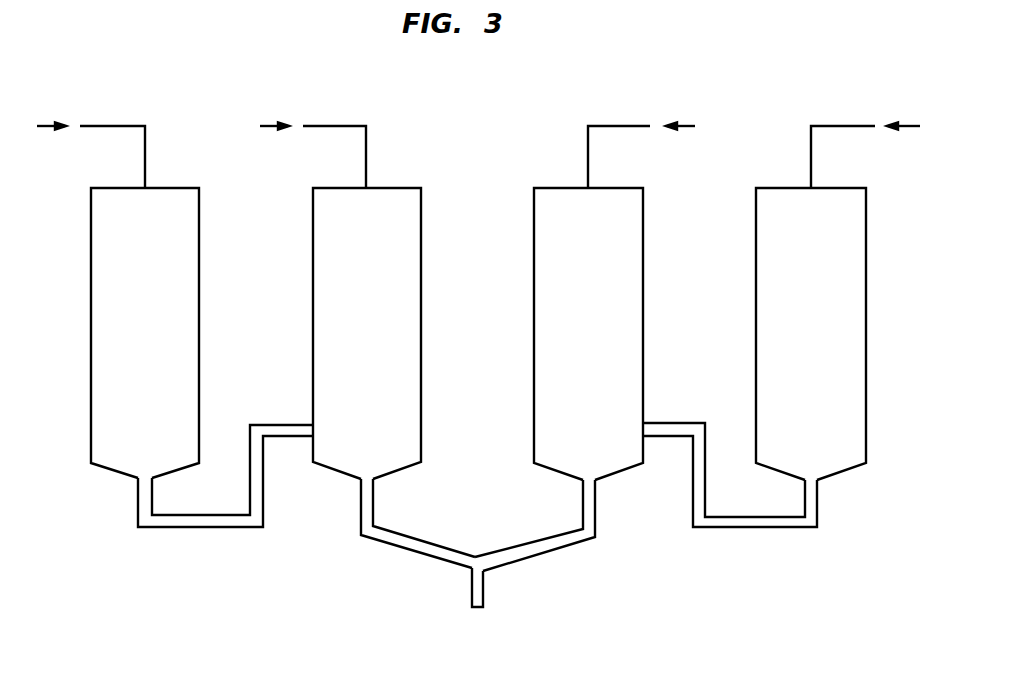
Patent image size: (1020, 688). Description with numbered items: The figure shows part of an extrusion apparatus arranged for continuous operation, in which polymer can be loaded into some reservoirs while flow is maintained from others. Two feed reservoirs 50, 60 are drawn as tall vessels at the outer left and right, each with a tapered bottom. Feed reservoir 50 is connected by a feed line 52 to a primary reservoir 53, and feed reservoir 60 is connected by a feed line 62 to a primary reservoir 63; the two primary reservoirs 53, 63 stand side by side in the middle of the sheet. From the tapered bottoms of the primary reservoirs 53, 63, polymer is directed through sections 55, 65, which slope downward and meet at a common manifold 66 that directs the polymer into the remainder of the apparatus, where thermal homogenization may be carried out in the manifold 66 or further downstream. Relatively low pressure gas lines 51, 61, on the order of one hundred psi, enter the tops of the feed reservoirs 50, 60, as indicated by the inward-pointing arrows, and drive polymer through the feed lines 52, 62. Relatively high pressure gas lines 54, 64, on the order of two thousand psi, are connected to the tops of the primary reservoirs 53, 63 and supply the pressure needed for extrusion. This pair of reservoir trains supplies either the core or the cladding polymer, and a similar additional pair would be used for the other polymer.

The feed reservoir 50 is at (91, 309).
The low pressure gas line 51 is at (115, 127).
The feed line 52 is at (206, 532).
The primary reservoir 53 is at (313, 309).
The high pressure gas line 54 is at (357, 127).
The section 55 is at (359, 531).
The feed reservoir 60 is at (755, 309).
The low pressure gas line 61 is at (823, 127).
The feed line 62 is at (760, 532).
The primary reservoir 63 is at (534, 309).
The high pressure gas line 64 is at (597, 127).
The section 65 is at (597, 526).
The manifold 66 is at (470, 574).